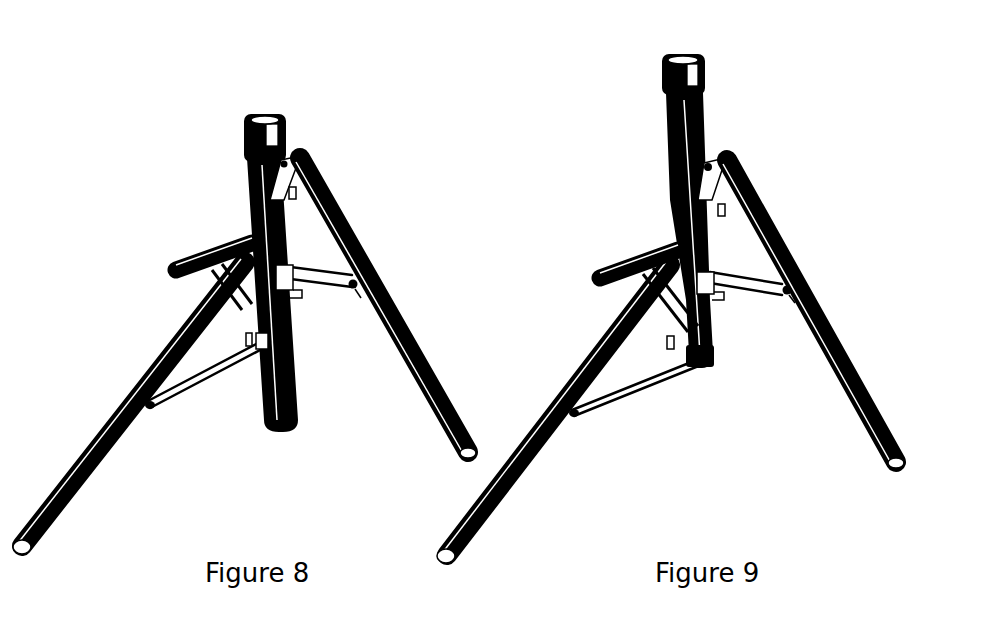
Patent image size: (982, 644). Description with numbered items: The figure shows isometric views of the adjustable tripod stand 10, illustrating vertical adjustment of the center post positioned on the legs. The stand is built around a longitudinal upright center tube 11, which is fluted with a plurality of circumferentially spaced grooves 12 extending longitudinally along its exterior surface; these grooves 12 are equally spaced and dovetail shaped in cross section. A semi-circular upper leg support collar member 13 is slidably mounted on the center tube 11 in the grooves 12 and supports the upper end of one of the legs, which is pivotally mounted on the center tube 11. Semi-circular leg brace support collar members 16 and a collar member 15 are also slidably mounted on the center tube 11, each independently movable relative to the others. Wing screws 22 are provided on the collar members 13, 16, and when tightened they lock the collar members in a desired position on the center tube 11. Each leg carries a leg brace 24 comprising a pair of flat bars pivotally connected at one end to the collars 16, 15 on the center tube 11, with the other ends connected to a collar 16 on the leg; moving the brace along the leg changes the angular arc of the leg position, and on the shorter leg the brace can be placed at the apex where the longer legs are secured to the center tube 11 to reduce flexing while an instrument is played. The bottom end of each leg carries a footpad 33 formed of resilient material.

In FIG. 8, the adjustable tripod stand 10 is at (378, 240).
In FIG. 9, the adjustable tripod stand 10 is at (829, 274).
In FIG. 8, the center tube 11 is at (213, 247).
In FIG. 9, the center tube 11 is at (665, 250).
In FIG. 8, the grooves 12 is at (258, 207).
In FIG. 9, the grooves 12 is at (673, 157).
In FIG. 8, the upper leg support collar member 13 is at (266, 182).
In FIG. 9, the upper leg support collar member 13 is at (697, 184).
In FIG. 8, the leg brace support collar member 15 is at (278, 347).
In FIG. 9, the leg brace support collar member 15 is at (702, 364).
In FIG. 8, the leg brace support collar member 16 is at (388, 282).
In FIG. 9, the leg brace support collar member 16 is at (718, 300).
In FIG. 8, the wing screws 22 is at (293, 200).
In FIG. 9, the wing screws 22 is at (722, 214).
In FIG. 8, the leg brace 24 is at (324, 265).
In FIG. 9, the leg brace 24 is at (630, 397).
In FIG. 8, the footpad 33 is at (30, 553).
In FIG. 9, the footpad 33 is at (452, 561).